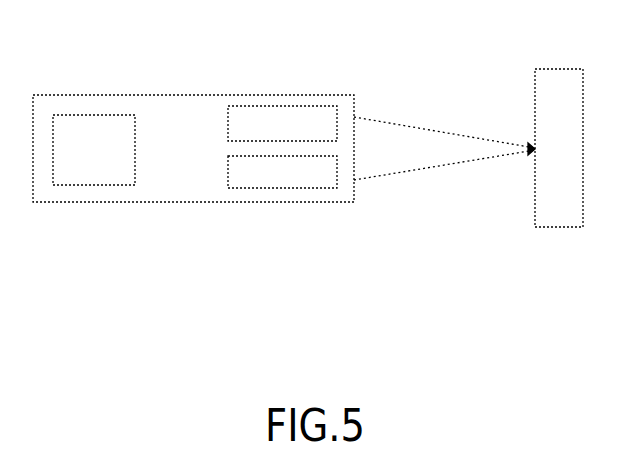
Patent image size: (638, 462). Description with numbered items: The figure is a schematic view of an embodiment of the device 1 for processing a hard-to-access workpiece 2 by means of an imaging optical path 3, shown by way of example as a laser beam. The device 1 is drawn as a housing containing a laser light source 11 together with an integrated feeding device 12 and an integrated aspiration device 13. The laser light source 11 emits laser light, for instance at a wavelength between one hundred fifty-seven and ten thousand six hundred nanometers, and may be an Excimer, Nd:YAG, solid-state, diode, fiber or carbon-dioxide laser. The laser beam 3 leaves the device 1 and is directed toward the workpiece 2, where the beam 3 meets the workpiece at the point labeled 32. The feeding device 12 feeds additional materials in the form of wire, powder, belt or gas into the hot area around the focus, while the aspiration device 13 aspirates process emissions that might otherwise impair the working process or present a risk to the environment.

The device 1 is at (193, 206).
The laser light source 11 is at (94, 150).
The feeding device 12 is at (270, 124).
The aspiration device 13 is at (290, 173).
The workpiece 2 is at (557, 229).
The imaging optical path 3 is at (417, 156).
The reflected signal 32 is at (528, 146).